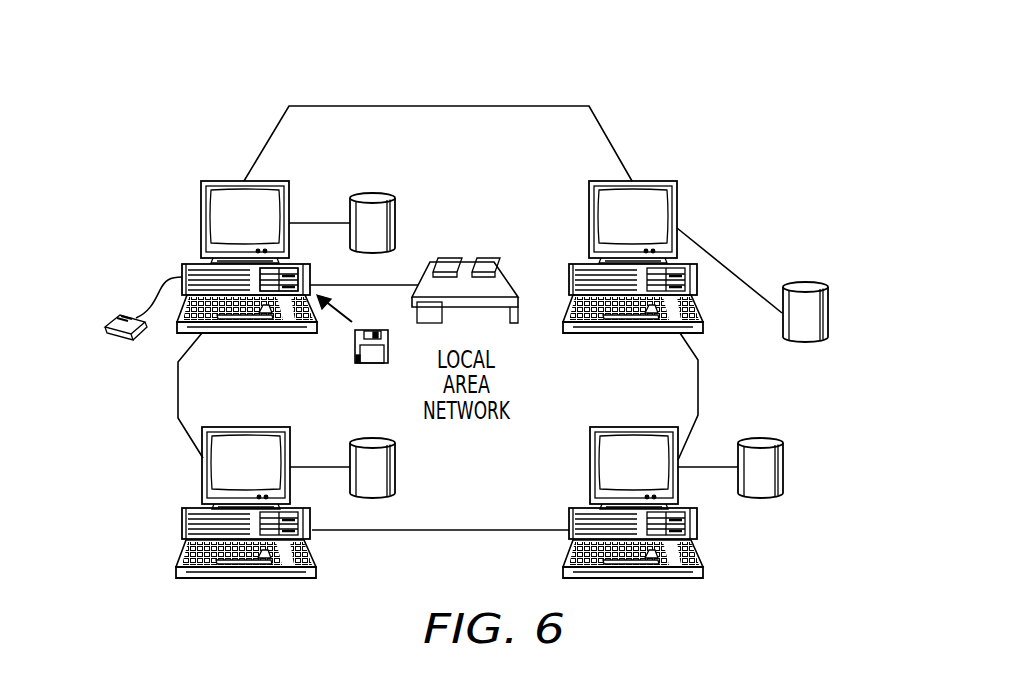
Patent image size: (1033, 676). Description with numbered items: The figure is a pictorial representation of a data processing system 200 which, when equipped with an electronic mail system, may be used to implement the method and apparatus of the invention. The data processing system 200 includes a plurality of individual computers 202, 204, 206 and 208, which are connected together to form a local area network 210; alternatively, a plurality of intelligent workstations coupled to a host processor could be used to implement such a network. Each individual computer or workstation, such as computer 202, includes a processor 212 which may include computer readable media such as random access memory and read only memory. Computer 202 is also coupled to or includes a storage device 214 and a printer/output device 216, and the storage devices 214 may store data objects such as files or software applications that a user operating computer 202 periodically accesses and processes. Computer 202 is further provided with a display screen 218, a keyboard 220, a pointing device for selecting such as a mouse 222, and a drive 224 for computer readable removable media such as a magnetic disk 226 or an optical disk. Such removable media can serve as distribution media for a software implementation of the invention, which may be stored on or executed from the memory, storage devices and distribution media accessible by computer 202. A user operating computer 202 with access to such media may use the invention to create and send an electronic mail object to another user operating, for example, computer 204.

The data processing system 200 is at (388, 80).
The computer 202 is at (239, 256).
The computer 204 is at (589, 217).
The computer 206 is at (222, 427).
The computer 208 is at (640, 427).
The local area network 210 is at (452, 531).
The processor 212 is at (183, 268).
The storage device 214 is at (396, 223).
The printer/output device 216 is at (508, 283).
The display screen 218 is at (214, 215).
The keyboard 220 is at (272, 336).
The mouse 222 is at (117, 318).
The drive 224 is at (300, 276).
The magnetic disk 226 is at (372, 364).